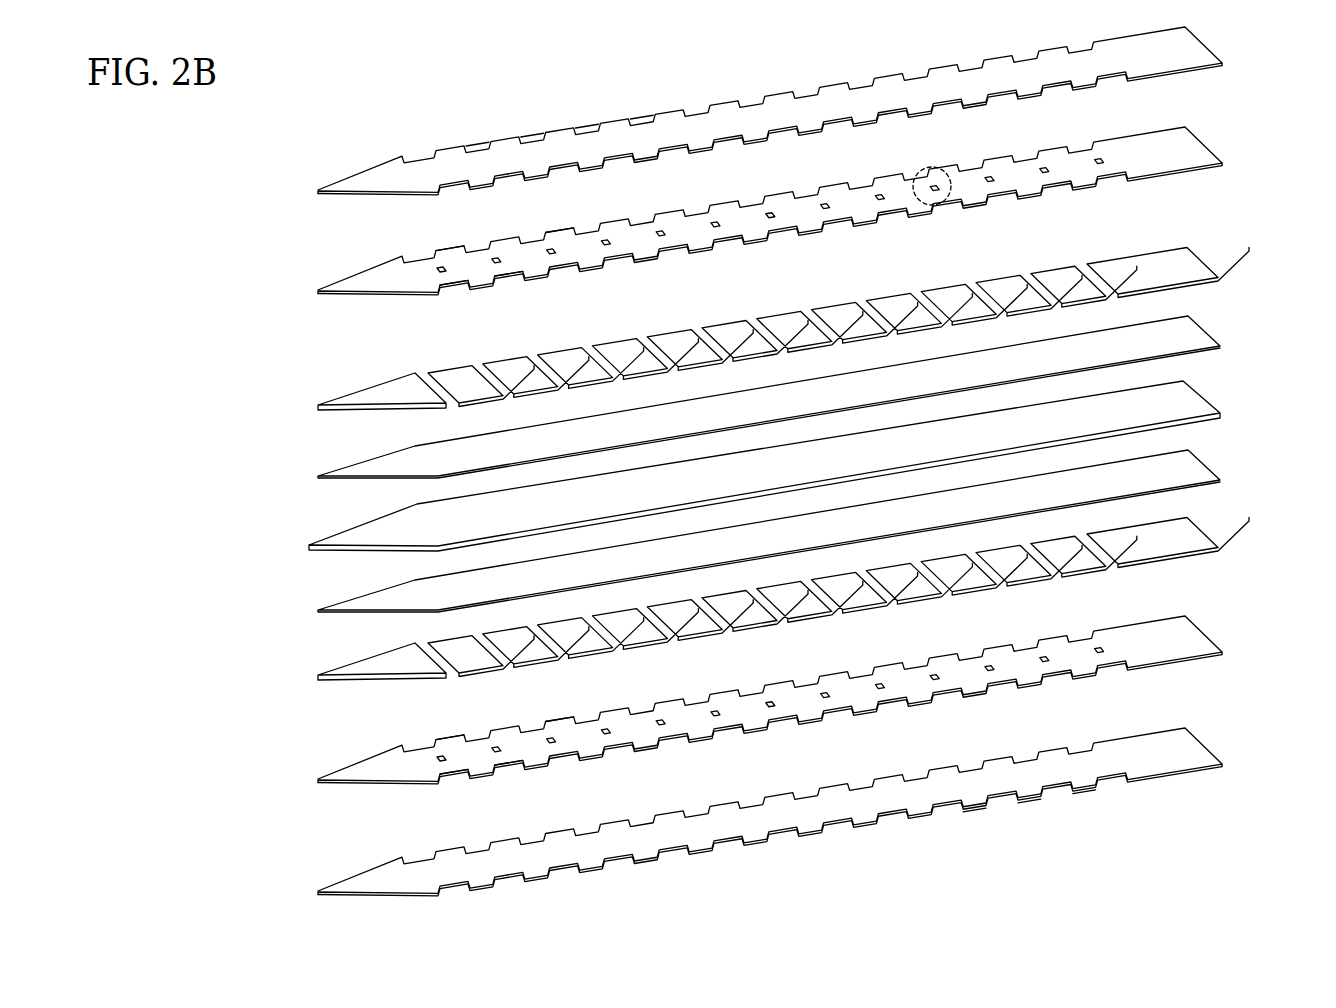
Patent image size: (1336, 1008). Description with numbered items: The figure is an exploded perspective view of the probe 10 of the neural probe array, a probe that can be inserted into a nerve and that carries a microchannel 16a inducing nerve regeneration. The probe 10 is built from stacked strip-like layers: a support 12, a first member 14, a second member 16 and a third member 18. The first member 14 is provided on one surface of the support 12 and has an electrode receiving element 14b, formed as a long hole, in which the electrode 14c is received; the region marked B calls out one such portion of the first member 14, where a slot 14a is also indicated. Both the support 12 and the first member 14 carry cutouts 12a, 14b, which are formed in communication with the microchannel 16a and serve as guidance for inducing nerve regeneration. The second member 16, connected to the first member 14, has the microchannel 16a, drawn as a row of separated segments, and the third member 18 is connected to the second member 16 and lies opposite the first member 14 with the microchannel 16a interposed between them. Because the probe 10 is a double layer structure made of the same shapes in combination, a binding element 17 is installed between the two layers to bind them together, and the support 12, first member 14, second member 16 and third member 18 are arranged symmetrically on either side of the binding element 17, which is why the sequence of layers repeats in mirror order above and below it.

The probe 10 is at (345, 127).
The support 12 is at (818, 461).
The cutouts 12a is at (647, 123).
The first member 14 is at (818, 464).
The slots 14a is at (733, 238).
The electrode receiving element 14b is at (543, 244).
The electrode 14c is at (537, 258).
The second member 16 is at (818, 454).
The microchannel 16a is at (935, 297).
The binding element 17 is at (1210, 395).
The third member 18 is at (1210, 330).
The detail region B is at (952, 212).